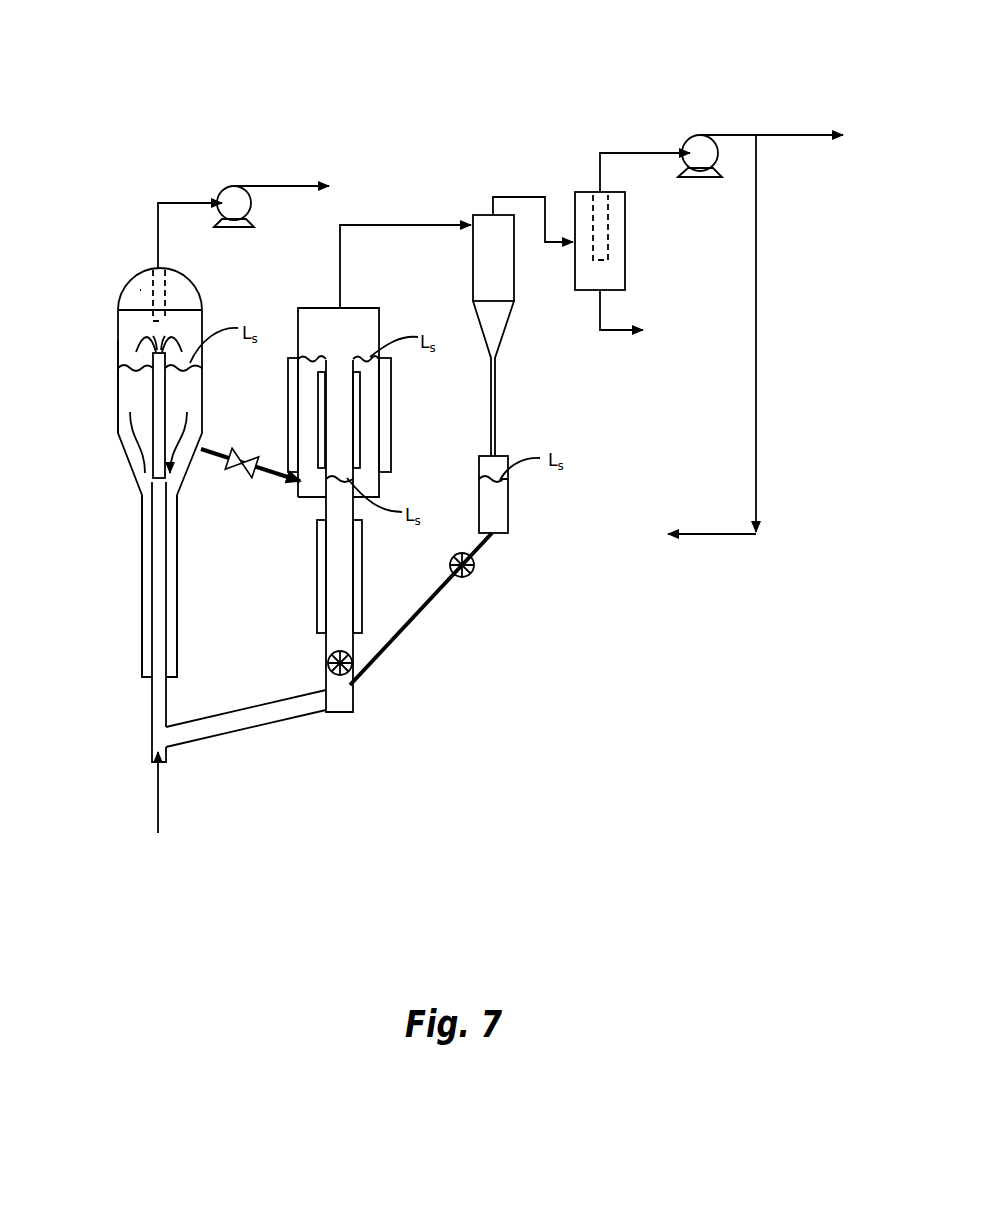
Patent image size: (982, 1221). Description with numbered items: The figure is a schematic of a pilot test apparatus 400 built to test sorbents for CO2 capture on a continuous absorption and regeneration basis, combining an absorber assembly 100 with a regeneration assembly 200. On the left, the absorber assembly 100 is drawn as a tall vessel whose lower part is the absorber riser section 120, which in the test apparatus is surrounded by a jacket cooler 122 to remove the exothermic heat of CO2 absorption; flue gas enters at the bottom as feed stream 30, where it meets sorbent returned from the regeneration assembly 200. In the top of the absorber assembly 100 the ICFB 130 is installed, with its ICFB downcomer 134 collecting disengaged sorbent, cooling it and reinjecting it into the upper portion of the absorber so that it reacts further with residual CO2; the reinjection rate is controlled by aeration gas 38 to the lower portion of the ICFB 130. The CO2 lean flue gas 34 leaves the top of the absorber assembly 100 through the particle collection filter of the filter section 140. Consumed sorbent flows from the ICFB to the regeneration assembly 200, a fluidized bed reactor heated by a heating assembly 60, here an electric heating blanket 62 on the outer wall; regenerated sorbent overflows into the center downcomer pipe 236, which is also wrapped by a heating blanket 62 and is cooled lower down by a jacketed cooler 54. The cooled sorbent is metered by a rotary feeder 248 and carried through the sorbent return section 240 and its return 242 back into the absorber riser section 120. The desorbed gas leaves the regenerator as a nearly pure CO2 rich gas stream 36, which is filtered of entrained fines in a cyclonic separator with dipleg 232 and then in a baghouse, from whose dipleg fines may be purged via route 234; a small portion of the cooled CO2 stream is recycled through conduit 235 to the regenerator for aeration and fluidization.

The test apparatus 400 is at (503, 89).
The absorber assembly 100 is at (120, 273).
The ICFB 130 is at (208, 300).
The filter section 140 is at (140, 298).
The ICFB downcomer 134 is at (138, 393).
The CO2 lean flue gas 34 is at (243, 225).
The heating assembly 60 is at (278, 397).
The aeration gas 38 is at (128, 472).
The absorber riser section 120 is at (138, 658).
The jacket cooler 122 is at (178, 598).
The feed stream 30 is at (160, 805).
The return 242 is at (243, 720).
The regeneration assembly 200 is at (377, 305).
The electric heating blanket 62 is at (317, 392).
The downcomer pipe 236 is at (342, 412).
The jacketed cooler 54 is at (363, 593).
The rotary feeder 248 is at (327, 660).
The sorbent return section 240 is at (380, 688).
The cyclone downcomer 232 is at (497, 420).
The route 234 is at (631, 266).
The CO2 rich gas stream 36 is at (722, 149).
The conduit 235 is at (756, 452).